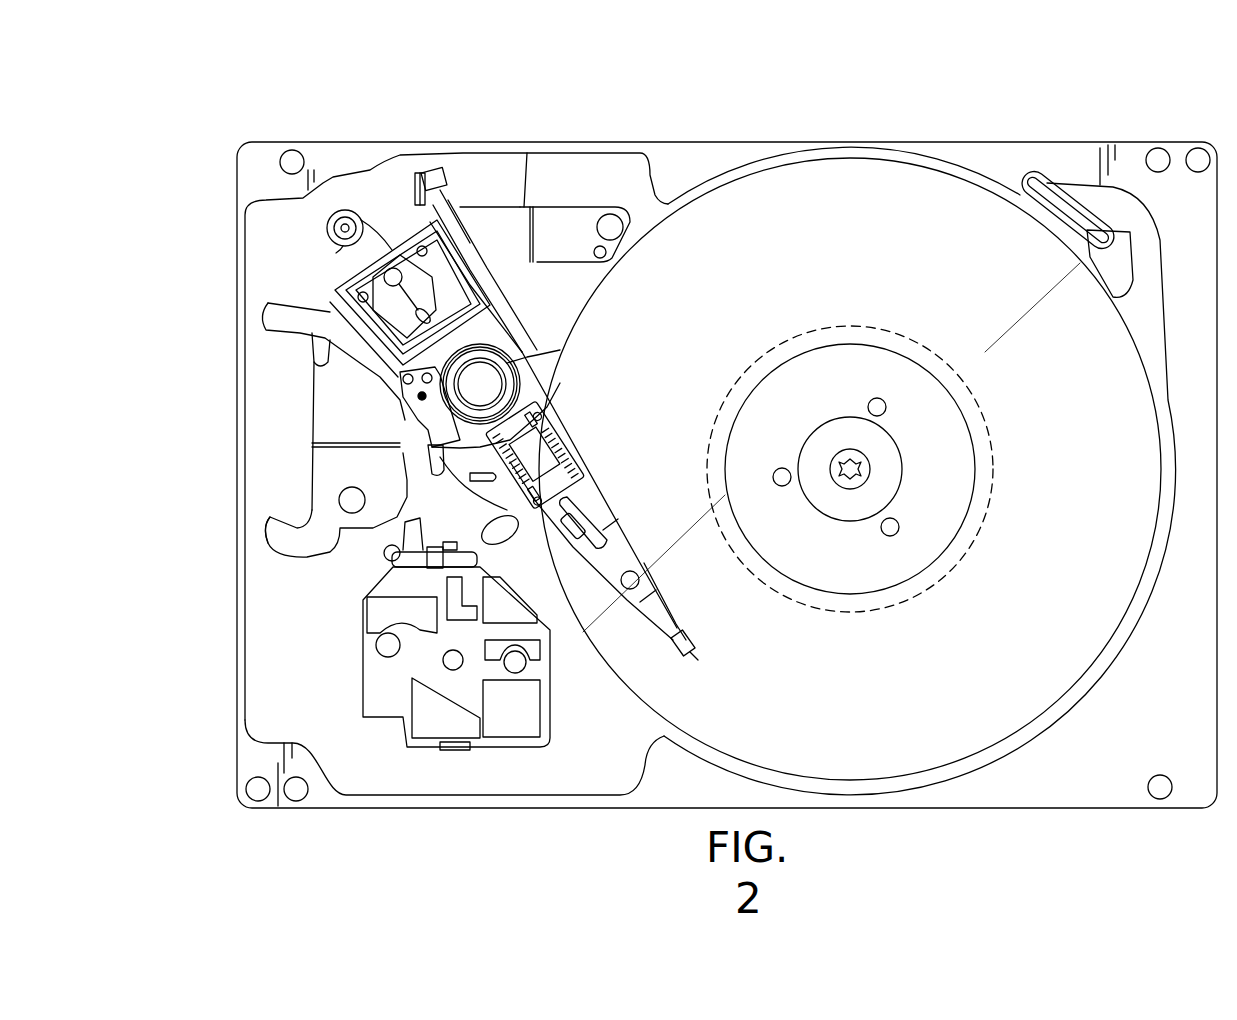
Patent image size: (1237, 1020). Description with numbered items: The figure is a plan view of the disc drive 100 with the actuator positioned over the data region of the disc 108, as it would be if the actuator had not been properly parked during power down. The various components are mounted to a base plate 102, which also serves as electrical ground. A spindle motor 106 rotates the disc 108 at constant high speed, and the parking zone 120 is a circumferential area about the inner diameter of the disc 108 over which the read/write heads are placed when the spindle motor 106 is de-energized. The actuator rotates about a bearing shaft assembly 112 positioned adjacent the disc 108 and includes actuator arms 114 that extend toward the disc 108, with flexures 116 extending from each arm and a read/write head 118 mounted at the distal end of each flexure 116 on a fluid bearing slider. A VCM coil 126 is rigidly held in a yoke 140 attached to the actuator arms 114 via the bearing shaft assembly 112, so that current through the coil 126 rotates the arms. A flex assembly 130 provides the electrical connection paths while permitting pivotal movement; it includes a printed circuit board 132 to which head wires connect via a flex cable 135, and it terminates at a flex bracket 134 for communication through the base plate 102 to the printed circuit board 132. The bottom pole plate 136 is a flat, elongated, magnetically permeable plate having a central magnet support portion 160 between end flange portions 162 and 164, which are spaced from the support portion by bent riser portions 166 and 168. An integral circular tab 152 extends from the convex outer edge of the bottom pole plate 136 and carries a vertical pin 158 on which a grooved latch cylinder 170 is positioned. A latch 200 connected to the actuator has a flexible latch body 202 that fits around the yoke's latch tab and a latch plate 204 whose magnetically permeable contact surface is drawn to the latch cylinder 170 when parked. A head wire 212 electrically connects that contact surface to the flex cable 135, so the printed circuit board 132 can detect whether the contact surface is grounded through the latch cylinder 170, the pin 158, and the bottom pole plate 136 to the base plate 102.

The disc drive 100 is at (940, 128).
The base plate 102 is at (446, 783).
The spindle motor 106 is at (835, 412).
The disc 108 is at (848, 696).
The bearing shaft assembly 112 is at (484, 382).
The actuator arm 114 is at (590, 510).
The flexure 116 is at (650, 602).
The read/write head 118 is at (690, 648).
The parking zone 120 is at (990, 486).
The VCM coil 126 is at (480, 303).
The flex assembly 130 is at (514, 544).
The printed circuit board 132 is at (537, 670).
The flex bracket 134 is at (387, 553).
The flex cable 135 is at (475, 520).
The bottom pole plate 136 is at (283, 508).
The yoke 140 is at (470, 250).
The circular tab 152 is at (336, 253).
The pin 158 is at (340, 228).
The magnet support portion 160 is at (322, 406).
The end flange portion 162 is at (284, 540).
The end flange portion 164 is at (587, 215).
The riser portion 166 is at (400, 452).
The riser portion 168 is at (535, 228).
The latch cylinder 170 is at (346, 210).
The latch 200 is at (460, 178).
The latch body 202 is at (437, 175).
The latch plate 204 is at (410, 185).
The head wire 212 is at (463, 226).